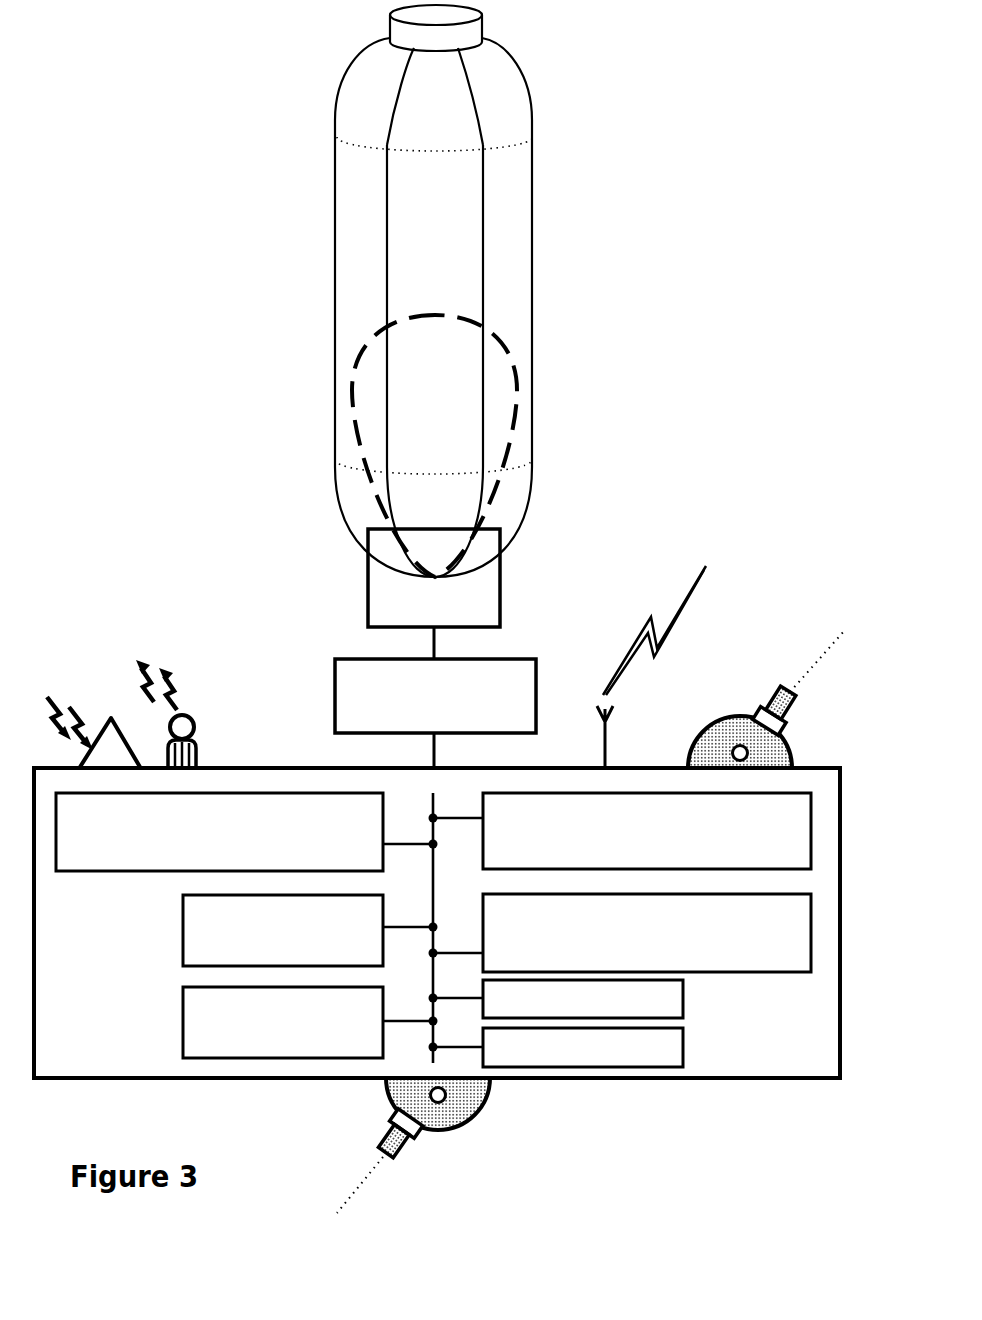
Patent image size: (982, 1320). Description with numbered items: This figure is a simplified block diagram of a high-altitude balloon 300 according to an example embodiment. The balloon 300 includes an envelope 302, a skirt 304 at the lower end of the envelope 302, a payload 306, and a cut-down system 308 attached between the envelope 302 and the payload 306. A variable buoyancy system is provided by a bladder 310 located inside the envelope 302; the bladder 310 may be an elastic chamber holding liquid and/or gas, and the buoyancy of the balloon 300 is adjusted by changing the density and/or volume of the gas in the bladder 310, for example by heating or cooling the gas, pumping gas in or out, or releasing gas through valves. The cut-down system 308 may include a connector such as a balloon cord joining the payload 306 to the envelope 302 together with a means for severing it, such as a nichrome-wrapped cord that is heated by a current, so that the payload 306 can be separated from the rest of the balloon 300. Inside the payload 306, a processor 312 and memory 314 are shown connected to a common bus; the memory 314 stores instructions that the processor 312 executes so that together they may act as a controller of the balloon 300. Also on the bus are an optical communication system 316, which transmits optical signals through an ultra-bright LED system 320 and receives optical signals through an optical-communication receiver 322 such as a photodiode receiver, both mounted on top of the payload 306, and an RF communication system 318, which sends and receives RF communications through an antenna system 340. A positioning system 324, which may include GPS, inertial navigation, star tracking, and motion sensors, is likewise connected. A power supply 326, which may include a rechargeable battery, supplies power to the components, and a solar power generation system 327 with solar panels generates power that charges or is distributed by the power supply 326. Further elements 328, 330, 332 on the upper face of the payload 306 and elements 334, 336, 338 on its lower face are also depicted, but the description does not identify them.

The high-altitude balloon 300 is at (245, 60).
The envelope 302 is at (448, 235).
The skirt 304 is at (448, 616).
The payload 306 is at (819, 1062).
The cut-down system 308 is at (448, 714).
The bladder 310 is at (448, 445).
The processor 312 is at (296, 1039).
The memory 314 is at (296, 947).
The optical communication system 316 is at (345, 840).
The RF communication system 318 is at (757, 839).
The ultra-bright LED system 320 is at (197, 731).
The optical-communication receiver 322 is at (107, 718).
The positioning system 324 is at (730, 941).
The power supply 326 is at (595, 1015).
The solar power generation system 327 is at (623, 1064).
The upward facing camera dome 328 is at (712, 722).
The upward facing camera 330 is at (759, 700).
The upward camera line of sight 332 is at (818, 655).
The downward facing camera dome 334 is at (478, 1112).
The downward facing camera 336 is at (382, 1144).
The downward camera line of sight 338 is at (357, 1187).
The antenna system 340 is at (608, 746).